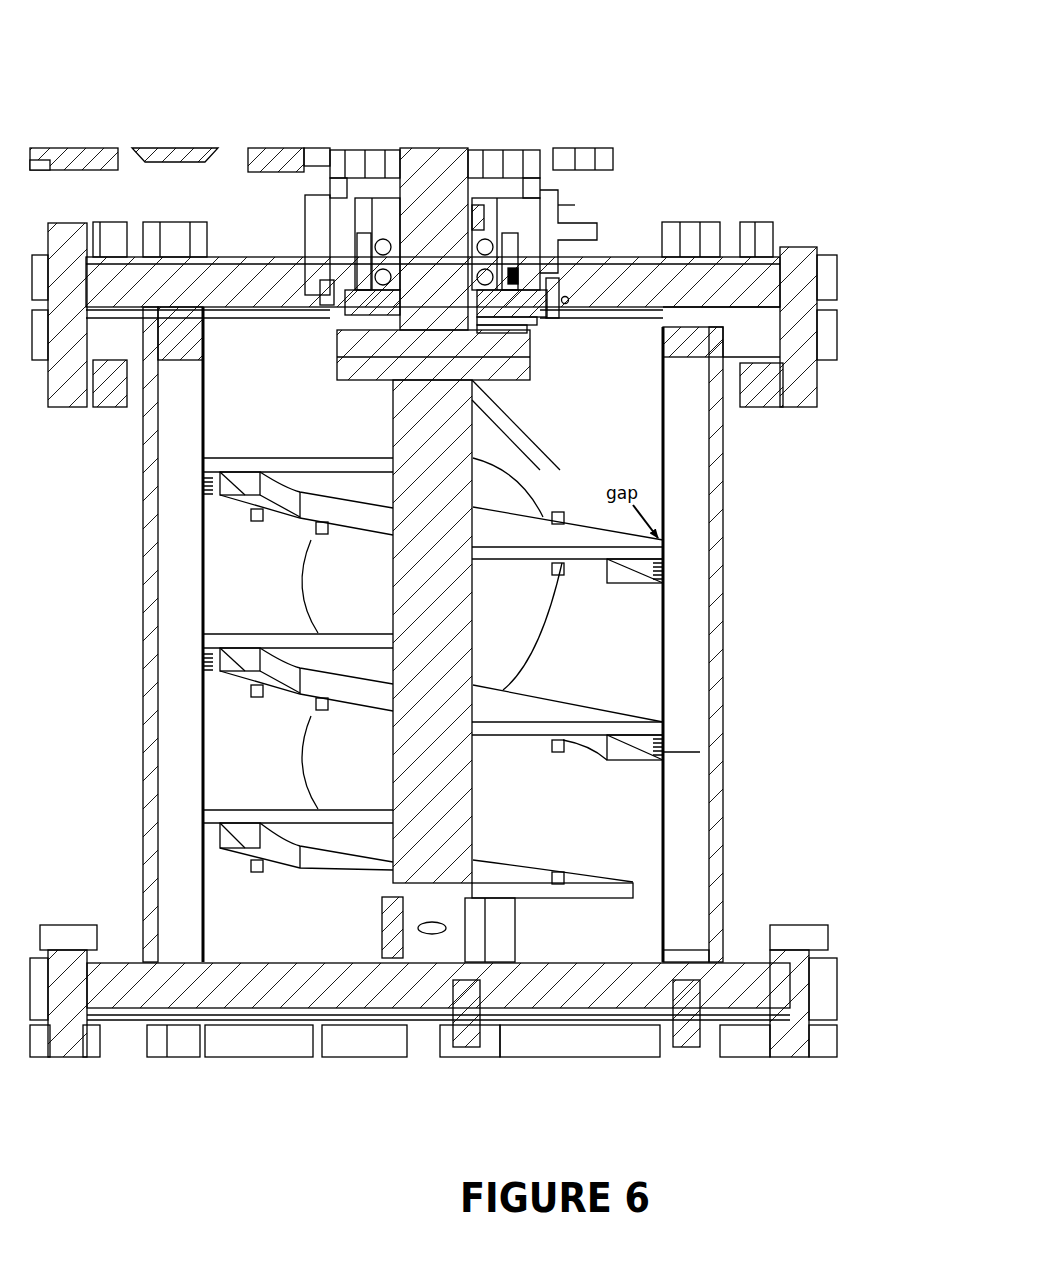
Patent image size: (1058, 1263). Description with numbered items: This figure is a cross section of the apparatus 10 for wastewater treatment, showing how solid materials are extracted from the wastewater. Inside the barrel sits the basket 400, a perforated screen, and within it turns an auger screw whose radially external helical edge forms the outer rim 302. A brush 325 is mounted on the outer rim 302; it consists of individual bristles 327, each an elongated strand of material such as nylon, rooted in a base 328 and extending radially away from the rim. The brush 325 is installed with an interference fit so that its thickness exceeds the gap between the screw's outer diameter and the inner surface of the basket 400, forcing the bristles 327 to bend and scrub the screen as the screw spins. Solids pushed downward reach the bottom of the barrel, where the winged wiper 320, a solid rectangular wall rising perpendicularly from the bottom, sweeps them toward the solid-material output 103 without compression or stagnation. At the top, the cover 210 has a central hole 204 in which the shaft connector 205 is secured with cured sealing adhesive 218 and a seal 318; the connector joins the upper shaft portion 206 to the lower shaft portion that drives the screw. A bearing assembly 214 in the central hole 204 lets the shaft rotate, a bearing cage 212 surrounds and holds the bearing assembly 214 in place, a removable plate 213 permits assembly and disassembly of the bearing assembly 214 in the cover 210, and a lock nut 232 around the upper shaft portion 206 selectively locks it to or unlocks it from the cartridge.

The apparatus 10 is at (262, 105).
The upper shaft portion 206 is at (612, 160).
The lock nut 232 is at (578, 209).
The bearing cage 212 is at (590, 237).
The cover 210 is at (845, 282).
The bearing assembly 214 is at (569, 300).
The removable plate 213 is at (527, 342).
The sealing adhesive 218 is at (502, 334).
The seal 318 is at (541, 336).
The shaft connector 205 is at (548, 380).
The brush 325 is at (668, 747).
The central hole 204 is at (490, 608).
The bristle 327 is at (667, 758).
The outer rim 302 is at (636, 762).
The basket 400 is at (672, 827).
The winged wiper 320 is at (523, 928).
The solid-material output 103 is at (567, 1030).
The base 328 is at (655, 735).